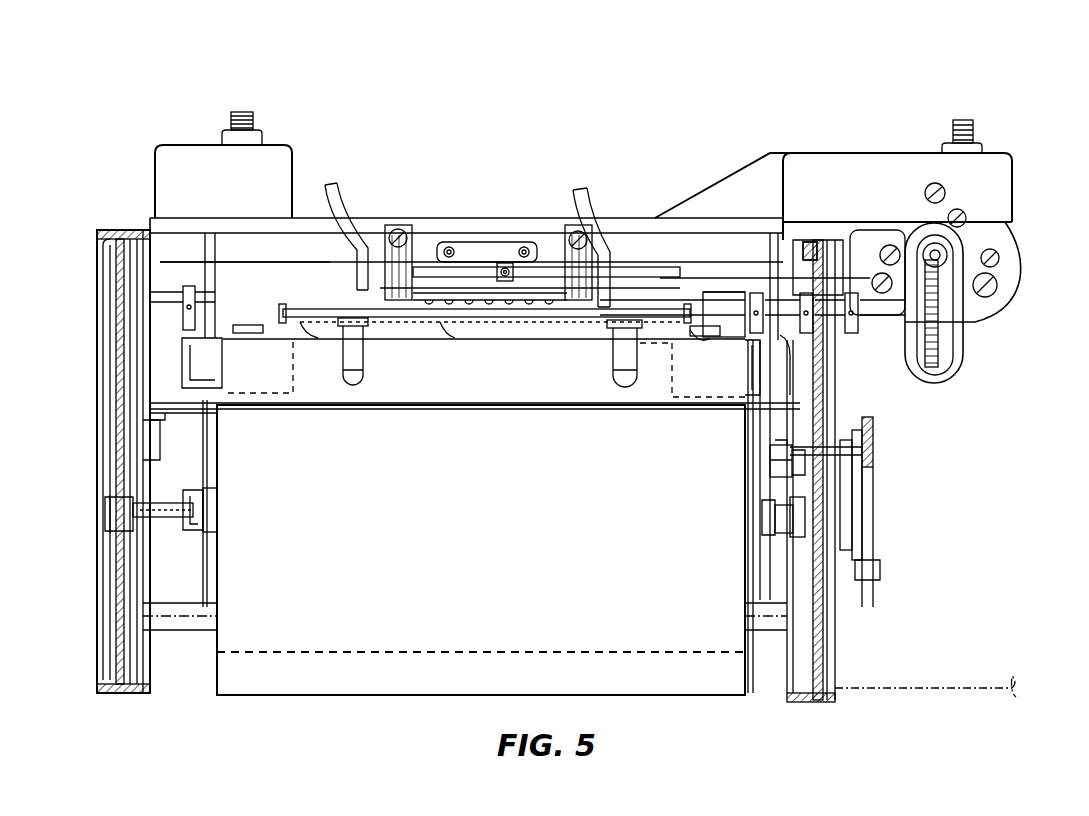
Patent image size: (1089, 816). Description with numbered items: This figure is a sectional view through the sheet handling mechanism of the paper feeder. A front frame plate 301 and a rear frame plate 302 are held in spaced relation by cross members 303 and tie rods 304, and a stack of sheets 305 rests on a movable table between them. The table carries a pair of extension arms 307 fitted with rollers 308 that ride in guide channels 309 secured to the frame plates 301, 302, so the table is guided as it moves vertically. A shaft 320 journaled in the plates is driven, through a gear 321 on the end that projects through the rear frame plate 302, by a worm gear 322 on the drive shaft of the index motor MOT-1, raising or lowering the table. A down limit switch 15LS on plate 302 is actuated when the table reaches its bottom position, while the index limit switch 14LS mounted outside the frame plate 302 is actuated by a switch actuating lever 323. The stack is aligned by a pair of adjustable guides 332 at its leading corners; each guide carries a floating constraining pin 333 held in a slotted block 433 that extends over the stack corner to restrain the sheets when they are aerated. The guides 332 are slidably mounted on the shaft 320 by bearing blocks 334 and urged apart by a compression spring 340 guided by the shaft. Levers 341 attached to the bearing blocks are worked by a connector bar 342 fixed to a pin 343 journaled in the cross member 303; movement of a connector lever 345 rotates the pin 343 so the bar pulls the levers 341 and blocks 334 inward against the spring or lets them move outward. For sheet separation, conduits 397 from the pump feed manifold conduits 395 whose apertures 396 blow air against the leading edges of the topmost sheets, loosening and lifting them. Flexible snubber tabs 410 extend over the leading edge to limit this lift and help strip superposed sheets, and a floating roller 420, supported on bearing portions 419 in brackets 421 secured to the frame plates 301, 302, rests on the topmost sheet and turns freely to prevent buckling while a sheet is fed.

The front frame plate 301 is at (150, 688).
The rear frame plate 302 is at (825, 640).
The cross member 303 is at (815, 152).
The tie rod 304 is at (215, 613).
The stack of sheets 305 is at (265, 696).
The extension arm 307 is at (215, 488).
The roller 308 is at (196, 528).
The guide channel 309 is at (190, 492).
The shaft 320 is at (172, 295).
The gear 321 is at (935, 380).
The worm gear 322 is at (928, 245).
The switch actuating lever 323 is at (866, 520).
The adjustable guide 332 is at (215, 370).
The pin 333 is at (738, 340).
The bearing block 334 is at (225, 285).
The compression spring 340 is at (335, 275).
The lever 341 is at (300, 270).
The connector bar 342 is at (515, 318).
The pin 343 is at (505, 330).
The connector lever 345 is at (774, 250).
The manifold conduit 395 is at (233, 330).
The aperture 396 is at (462, 338).
The conduit 397 is at (340, 190).
The snubber tab 410 is at (343, 380).
The bearing portion 419 is at (183, 414).
The floating roller 420 is at (440, 404).
The bracket 421 is at (165, 440).
The slotted block 433 is at (738, 310).
The index limit switch 14LS is at (880, 568).
The down limit switch 15LS is at (770, 462).
The index motor MOT-1 is at (990, 320).